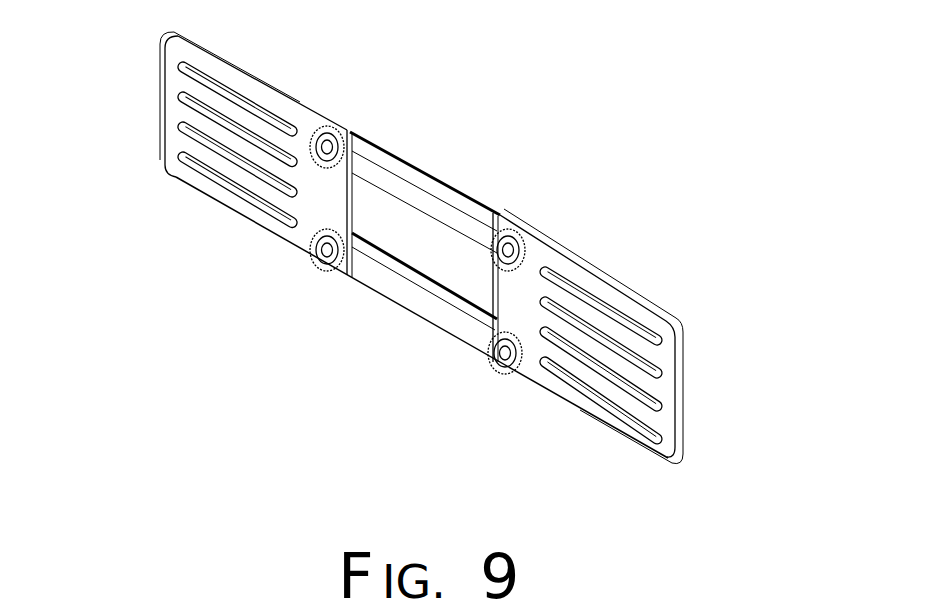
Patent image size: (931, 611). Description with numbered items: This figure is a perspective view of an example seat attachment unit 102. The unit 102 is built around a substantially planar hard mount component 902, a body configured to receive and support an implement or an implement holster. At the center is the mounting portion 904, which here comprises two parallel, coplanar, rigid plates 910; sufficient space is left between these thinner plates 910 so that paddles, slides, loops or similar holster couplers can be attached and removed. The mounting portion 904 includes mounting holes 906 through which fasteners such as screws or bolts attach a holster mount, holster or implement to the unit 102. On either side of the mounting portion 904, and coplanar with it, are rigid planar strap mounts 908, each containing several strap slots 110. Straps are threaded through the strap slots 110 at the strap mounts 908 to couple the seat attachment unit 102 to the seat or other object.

The seat attachment unit 102 is at (716, 70).
The hard mount component 902 is at (545, 243).
The mounting portion 904 is at (379, 296).
The mounting holes 906 is at (503, 247).
The strap mounts 908 is at (240, 70).
The plates 910 is at (452, 227).
The strap slots 110 is at (212, 175).